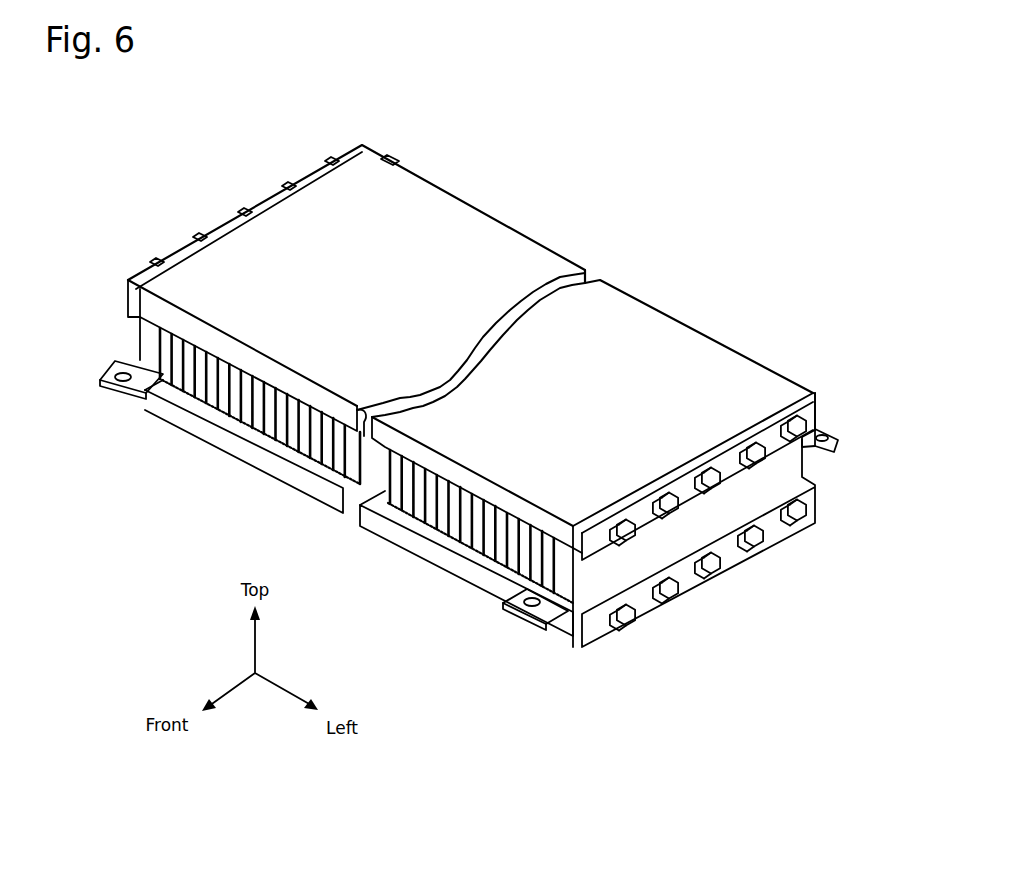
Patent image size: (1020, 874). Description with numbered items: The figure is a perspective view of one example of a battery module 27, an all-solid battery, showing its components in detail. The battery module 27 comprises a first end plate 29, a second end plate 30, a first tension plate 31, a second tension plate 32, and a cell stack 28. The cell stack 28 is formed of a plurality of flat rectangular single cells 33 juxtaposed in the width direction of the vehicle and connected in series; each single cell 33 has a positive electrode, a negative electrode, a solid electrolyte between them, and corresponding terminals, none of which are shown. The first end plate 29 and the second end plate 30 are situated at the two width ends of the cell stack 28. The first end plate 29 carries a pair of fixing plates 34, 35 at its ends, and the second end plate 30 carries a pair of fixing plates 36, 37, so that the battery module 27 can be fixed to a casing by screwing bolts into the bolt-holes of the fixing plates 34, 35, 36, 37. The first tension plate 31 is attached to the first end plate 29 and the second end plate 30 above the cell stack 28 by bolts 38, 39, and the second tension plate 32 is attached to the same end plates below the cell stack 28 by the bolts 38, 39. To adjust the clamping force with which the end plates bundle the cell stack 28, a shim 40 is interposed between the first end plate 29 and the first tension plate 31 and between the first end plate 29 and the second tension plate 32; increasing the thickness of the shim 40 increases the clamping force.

The battery module 27 is at (594, 178).
The cell stack 28 is at (235, 402).
The first end plate 29 is at (701, 520).
The second end plate 30 is at (225, 223).
The first tension plate 31 is at (633, 318).
The second tension plate 32 is at (415, 548).
The single cell 33 is at (353, 457).
The fixing plate 34 is at (840, 436).
The fixing plate 35 is at (512, 612).
The fixing plate 36 is at (391, 157).
The fixing plate 37 is at (112, 368).
The bolt 38 is at (755, 548).
The bolt 39 is at (292, 181).
The shim 40 is at (798, 392).